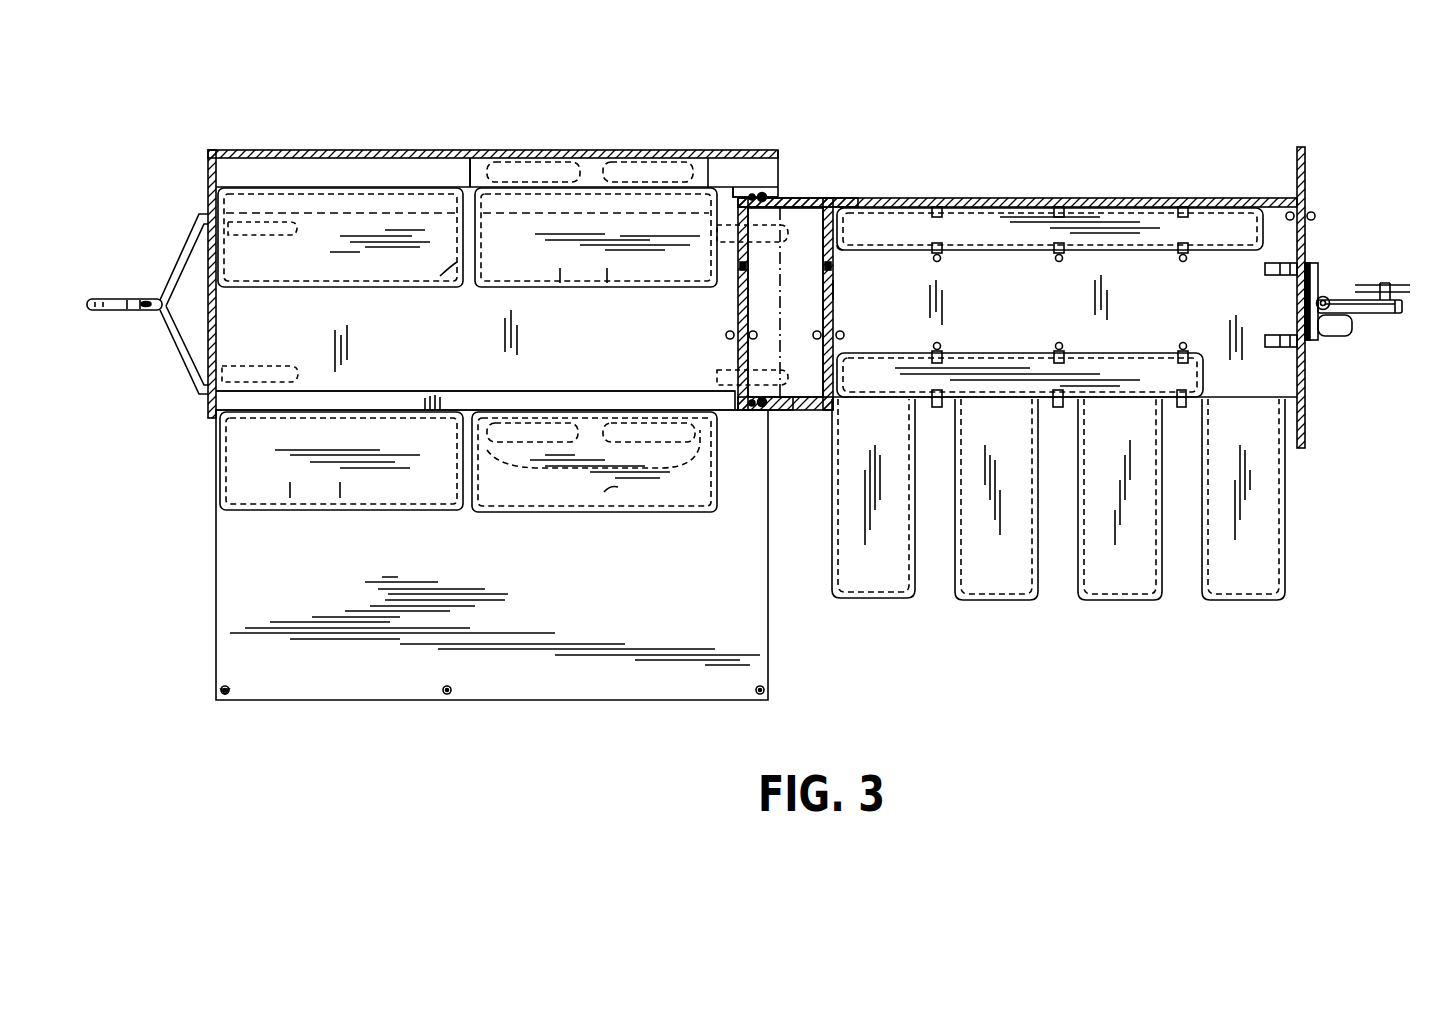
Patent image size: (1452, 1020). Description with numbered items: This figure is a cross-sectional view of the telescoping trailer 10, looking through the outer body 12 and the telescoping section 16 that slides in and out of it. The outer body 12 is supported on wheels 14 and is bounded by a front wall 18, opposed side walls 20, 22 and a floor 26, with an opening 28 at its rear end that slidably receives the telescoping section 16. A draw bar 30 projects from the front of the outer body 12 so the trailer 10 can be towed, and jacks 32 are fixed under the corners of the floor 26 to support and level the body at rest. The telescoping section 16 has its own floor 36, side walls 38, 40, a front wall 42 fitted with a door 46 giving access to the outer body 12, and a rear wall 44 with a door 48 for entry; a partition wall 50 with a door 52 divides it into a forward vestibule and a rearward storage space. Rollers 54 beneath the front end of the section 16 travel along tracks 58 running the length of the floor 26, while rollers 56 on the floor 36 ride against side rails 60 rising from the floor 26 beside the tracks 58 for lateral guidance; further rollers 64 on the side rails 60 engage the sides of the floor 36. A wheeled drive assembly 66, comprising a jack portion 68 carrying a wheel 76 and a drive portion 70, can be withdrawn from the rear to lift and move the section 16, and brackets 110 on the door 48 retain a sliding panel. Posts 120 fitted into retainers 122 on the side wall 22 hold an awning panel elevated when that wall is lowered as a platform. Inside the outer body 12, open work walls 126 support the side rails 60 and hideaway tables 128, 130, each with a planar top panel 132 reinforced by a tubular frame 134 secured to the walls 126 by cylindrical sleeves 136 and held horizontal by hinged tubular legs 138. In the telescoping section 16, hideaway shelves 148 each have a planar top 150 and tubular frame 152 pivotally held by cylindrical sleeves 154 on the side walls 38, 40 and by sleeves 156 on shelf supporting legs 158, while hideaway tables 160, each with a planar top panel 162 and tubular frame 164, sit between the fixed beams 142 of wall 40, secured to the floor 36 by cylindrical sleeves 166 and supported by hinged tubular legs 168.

The telescoping trailer 10 is at (924, 107).
The outer body 12 is at (466, 255).
The wheels 14 is at (537, 166).
The telescoping section 16 is at (1047, 292).
The front wall 18 is at (208, 180).
The side wall 20 is at (318, 149).
The side wall 22 is at (226, 598).
The floor 26 is at (284, 336).
The opening 28 is at (797, 193).
The draw bar 30 is at (110, 299).
The jacks 32 is at (265, 232).
The floor 36 is at (1259, 298).
The side wall 38 is at (1013, 205).
The side wall 40 is at (1056, 408).
The front wall 42 is at (764, 304).
The rear wall 44 is at (1307, 383).
The door 46 is at (740, 349).
The door 48 is at (1306, 232).
The partition wall 50 is at (838, 252).
The door 52 is at (834, 289).
The rollers 54 is at (752, 193).
The rollers 56 is at (763, 192).
The tracks 58 is at (343, 395).
The side rails 60 is at (402, 410).
The rollers 64 is at (772, 196).
The wheeled drive assembly 66 is at (1371, 286).
The jack portion 68 is at (1329, 297).
The drive portion 70 is at (1395, 306).
The wheel 76 is at (1345, 330).
The brackets 110 is at (1310, 341).
The posts 120 is at (228, 686).
The retainers 122 is at (228, 694).
The open work walls 126 is at (470, 185).
The hideaway tables 128 is at (502, 300).
The hideaway tables 130 is at (505, 516).
The planar top panel 132 is at (560, 276).
The tubular frame 134 is at (606, 277).
The cylindrical sleeves 136 is at (657, 190).
The tubular legs 138 is at (453, 271).
The fixed beams 142 is at (1181, 408).
The hideaway shelves 148 is at (913, 253).
The planar top 150 is at (895, 385).
The tubular frame 152 is at (1087, 250).
The cylindrical sleeves 154 is at (1181, 206).
The cylindrical sleeves 156 is at (1180, 252).
The shelf supporting legs 158 is at (1180, 350).
The hideaway tables 160 is at (830, 512).
The planar top panel 162 is at (1260, 568).
The tubular frame 164 is at (1287, 590).
The cylindrical sleeves 166 is at (892, 403).
The tubular legs 168 is at (1260, 600).